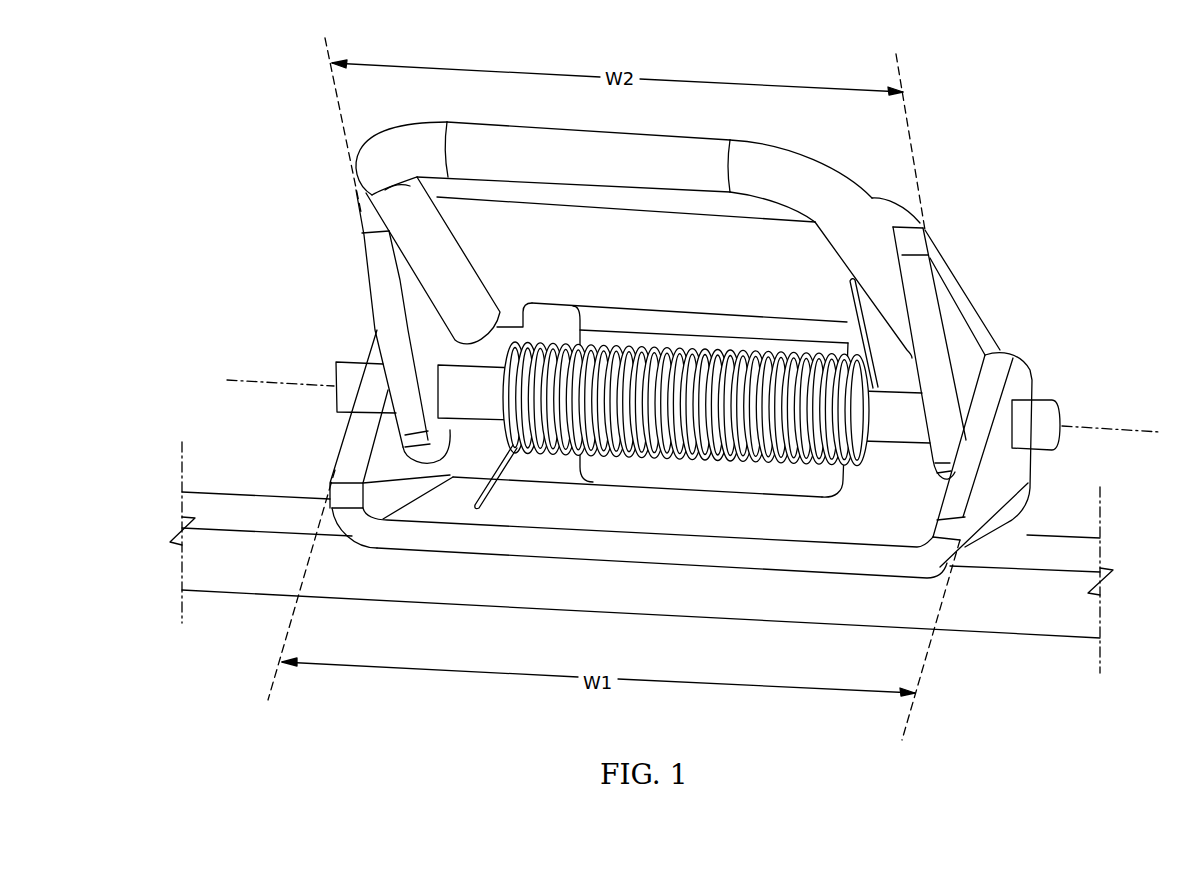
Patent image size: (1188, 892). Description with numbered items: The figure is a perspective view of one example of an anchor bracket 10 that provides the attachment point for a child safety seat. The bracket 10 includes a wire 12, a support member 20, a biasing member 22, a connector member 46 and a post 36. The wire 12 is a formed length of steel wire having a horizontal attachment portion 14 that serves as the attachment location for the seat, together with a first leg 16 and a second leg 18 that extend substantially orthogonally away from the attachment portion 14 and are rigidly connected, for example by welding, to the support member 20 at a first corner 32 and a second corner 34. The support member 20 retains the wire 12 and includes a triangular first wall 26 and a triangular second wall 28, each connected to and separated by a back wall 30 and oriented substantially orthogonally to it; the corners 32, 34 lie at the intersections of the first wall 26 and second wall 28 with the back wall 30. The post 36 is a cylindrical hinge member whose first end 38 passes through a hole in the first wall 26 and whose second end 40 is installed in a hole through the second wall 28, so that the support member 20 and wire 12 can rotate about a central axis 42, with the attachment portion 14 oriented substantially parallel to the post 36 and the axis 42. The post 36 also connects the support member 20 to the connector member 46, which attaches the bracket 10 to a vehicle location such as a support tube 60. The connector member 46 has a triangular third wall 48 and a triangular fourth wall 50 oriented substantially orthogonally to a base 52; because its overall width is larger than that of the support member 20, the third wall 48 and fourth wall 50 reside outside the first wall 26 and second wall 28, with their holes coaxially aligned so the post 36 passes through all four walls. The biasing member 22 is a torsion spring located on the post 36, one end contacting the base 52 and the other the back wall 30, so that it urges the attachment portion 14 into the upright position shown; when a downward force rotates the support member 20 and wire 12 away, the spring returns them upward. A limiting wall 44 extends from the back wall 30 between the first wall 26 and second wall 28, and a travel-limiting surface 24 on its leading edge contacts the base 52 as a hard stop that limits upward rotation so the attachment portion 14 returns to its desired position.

The anchor bracket 10 is at (697, 347).
The wire 12 is at (815, 177).
The attachment portion 14 is at (510, 123).
The first leg 16 is at (440, 247).
The second leg 18 is at (877, 238).
The support member 20 is at (953, 268).
The biasing member 22 is at (793, 358).
The travel-limiting surface 24 is at (657, 490).
The first wall 26 is at (418, 320).
The second wall 28 is at (955, 323).
The back wall 30 is at (602, 230).
The first corner 32 is at (360, 200).
The second corner 34 is at (897, 218).
The post 36 is at (892, 427).
The first end 38 is at (333, 398).
The second end 40 is at (1062, 403).
The central axis 42 is at (1147, 432).
The limiting wall 44 is at (608, 470).
The connector member 46 is at (765, 553).
The third wall 48 is at (385, 458).
The fourth wall 50 is at (1015, 463).
The base 52 is at (715, 512).
The support tube 60 is at (232, 582).